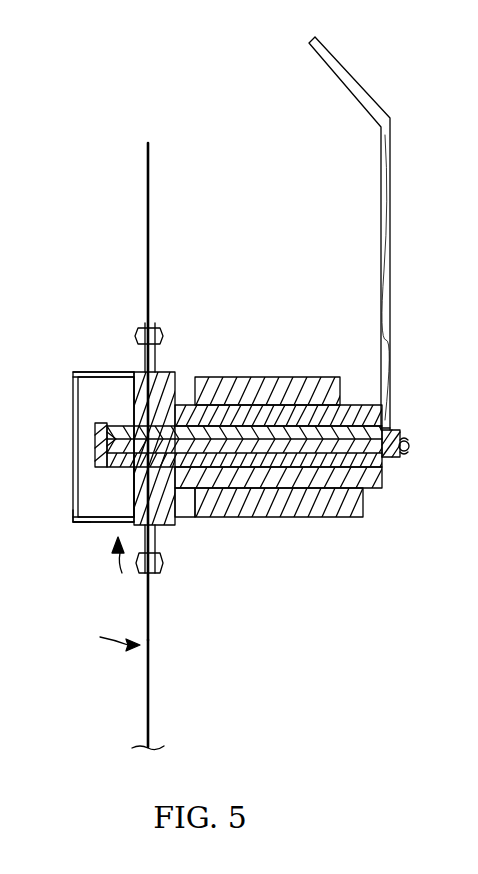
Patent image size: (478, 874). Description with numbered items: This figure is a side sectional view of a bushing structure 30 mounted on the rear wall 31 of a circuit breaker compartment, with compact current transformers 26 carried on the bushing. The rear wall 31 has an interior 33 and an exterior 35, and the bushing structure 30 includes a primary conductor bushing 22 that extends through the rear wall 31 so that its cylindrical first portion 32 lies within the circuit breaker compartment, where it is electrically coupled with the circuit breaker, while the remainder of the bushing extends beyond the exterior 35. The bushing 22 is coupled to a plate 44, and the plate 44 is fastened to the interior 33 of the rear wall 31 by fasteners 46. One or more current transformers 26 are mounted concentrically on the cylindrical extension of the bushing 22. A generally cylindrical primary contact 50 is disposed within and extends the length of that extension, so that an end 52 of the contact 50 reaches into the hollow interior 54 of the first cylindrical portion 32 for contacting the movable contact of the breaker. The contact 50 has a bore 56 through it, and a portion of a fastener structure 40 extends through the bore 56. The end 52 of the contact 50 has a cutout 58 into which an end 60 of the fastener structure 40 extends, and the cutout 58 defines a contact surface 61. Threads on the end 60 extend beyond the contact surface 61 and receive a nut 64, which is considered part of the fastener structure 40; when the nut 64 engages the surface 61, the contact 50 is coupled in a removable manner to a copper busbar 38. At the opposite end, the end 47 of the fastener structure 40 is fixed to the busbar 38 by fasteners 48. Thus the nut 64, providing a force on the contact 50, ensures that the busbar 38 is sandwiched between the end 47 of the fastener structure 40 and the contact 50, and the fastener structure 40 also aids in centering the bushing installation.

The primary conductor bushing 22 is at (184, 386).
The compact current transformer 26 is at (232, 376).
The bushing structure 30 is at (121, 567).
The rear wall 31 is at (150, 692).
The cylindrical first portion 32 is at (74, 528).
The interior 33 is at (107, 640).
The exterior 35 is at (150, 605).
The copper busbar 38 is at (392, 172).
The fastener structure 40 is at (402, 436).
The plate 44 is at (143, 364).
The fastener 46 is at (140, 332).
The end of fastener structure 47 is at (394, 428).
The fastener 48 is at (410, 446).
The primary contact 50 is at (370, 474).
The end of contact 52 is at (97, 457).
The hollow interior 54 is at (77, 512).
The bore 56 is at (355, 403).
The cutout 58 is at (104, 460).
The end of fastener structure 60 is at (107, 450).
The contact surface 61 is at (115, 470).
The nut 64 is at (73, 385).